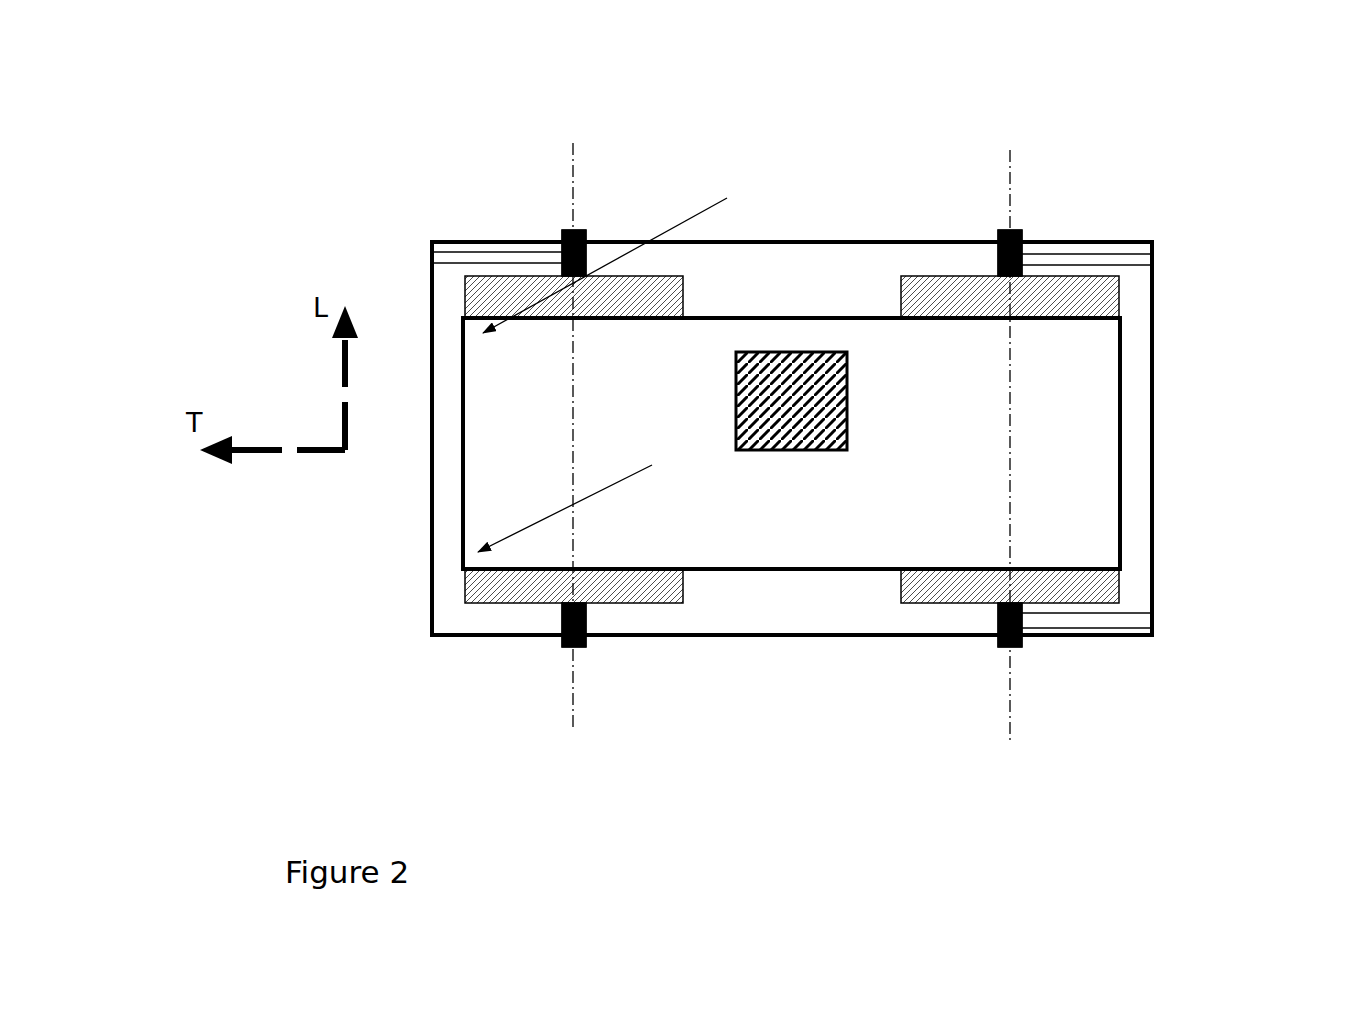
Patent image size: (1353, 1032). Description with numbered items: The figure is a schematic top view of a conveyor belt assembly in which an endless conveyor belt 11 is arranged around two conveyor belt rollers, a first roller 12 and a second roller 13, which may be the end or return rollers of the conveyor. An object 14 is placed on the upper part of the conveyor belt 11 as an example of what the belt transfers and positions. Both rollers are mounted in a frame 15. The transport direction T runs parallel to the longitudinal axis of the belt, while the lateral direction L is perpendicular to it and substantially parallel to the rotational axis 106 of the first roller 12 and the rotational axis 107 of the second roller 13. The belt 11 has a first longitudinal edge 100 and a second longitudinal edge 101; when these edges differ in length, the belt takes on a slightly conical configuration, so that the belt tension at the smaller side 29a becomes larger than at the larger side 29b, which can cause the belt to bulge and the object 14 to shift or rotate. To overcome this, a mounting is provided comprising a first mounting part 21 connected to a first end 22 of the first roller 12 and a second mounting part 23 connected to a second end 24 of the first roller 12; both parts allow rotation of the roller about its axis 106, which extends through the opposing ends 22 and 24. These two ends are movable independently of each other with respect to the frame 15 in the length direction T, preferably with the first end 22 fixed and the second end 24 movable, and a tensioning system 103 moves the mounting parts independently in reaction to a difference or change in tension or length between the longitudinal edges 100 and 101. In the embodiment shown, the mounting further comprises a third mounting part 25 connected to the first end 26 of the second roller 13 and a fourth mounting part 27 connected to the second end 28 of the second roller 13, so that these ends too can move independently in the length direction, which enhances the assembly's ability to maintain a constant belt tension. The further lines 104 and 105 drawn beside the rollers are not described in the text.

The conveyor belt 11 is at (712, 443).
The first roller 12 is at (592, 502).
The second roller 13 is at (1084, 439).
The object 14 is at (836, 258).
The frame 15 is at (849, 438).
The first mounting part 21 is at (462, 677).
The first end of the first roller 22 is at (613, 682).
The second mounting part 23 is at (434, 214).
The second end of the first roller 24 is at (619, 203).
The third mounting part 25 is at (930, 651).
The first end of the second roller 26 is at (1055, 682).
The fourth mounting part 27 is at (1152, 209).
The second end of the second roller 28 is at (1065, 193).
The smaller side of the belt 29a is at (627, 246).
The larger side of the belt 29b is at (592, 508).
The first longitudinal edge 100 is at (791, 238).
The second longitudinal edge 101 is at (791, 676).
The tensioning system 103 is at (446, 227).
The second side line 104 is at (1155, 236).
The third side line 105 is at (1158, 654).
The rotational axis of the first roller 106 is at (634, 397).
The rotational axis of the second roller 107 is at (1070, 483).